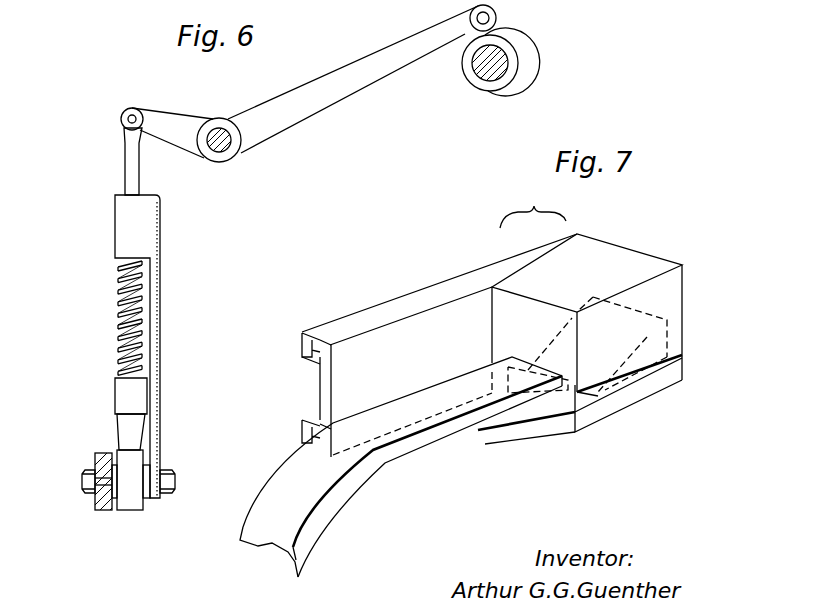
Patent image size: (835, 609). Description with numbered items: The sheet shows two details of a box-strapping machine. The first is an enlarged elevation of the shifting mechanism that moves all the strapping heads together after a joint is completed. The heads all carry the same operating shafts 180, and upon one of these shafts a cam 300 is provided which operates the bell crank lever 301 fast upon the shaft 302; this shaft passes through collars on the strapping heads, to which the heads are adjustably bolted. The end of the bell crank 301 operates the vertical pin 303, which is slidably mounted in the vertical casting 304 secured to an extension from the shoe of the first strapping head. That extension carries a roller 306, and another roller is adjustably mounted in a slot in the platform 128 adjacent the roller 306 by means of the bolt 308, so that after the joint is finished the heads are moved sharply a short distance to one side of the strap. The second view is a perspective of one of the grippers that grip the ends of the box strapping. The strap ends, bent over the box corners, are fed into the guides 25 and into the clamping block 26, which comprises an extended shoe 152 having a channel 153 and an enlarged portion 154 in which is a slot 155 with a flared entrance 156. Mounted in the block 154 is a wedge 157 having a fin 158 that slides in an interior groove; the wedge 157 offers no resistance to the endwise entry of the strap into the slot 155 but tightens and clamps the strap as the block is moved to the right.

In FIG. 7, the guide 25 is at (413, 443).
In FIG. 7, the clamping block 26 is at (533, 205).
In FIG. 6, the platform 128 is at (97, 455).
In FIG. 7, the extended shoe 152 is at (415, 373).
In FIG. 7, the channel 153 is at (310, 337).
In FIG. 7, the enlarged portion 154 is at (583, 273).
In FIG. 7, the slot 155 is at (672, 357).
In FIG. 7, the flared entrance 156 is at (582, 395).
In FIG. 7, the wedge 157 is at (618, 333).
In FIG. 7, the fin 158 is at (648, 338).
In FIG. 6, the operating shaft 180 is at (485, 72).
In FIG. 6, the cam 300 is at (503, 86).
In FIG. 6, the bell crank lever 301 is at (177, 118).
In FIG. 6, the shaft 302 is at (229, 150).
In FIG. 6, the vertical pin 303 is at (132, 173).
In FIG. 6, the vertical casting 304 is at (152, 348).
In FIG. 6, the roller 306 is at (135, 502).
In FIG. 6, the bolt 308 is at (105, 482).